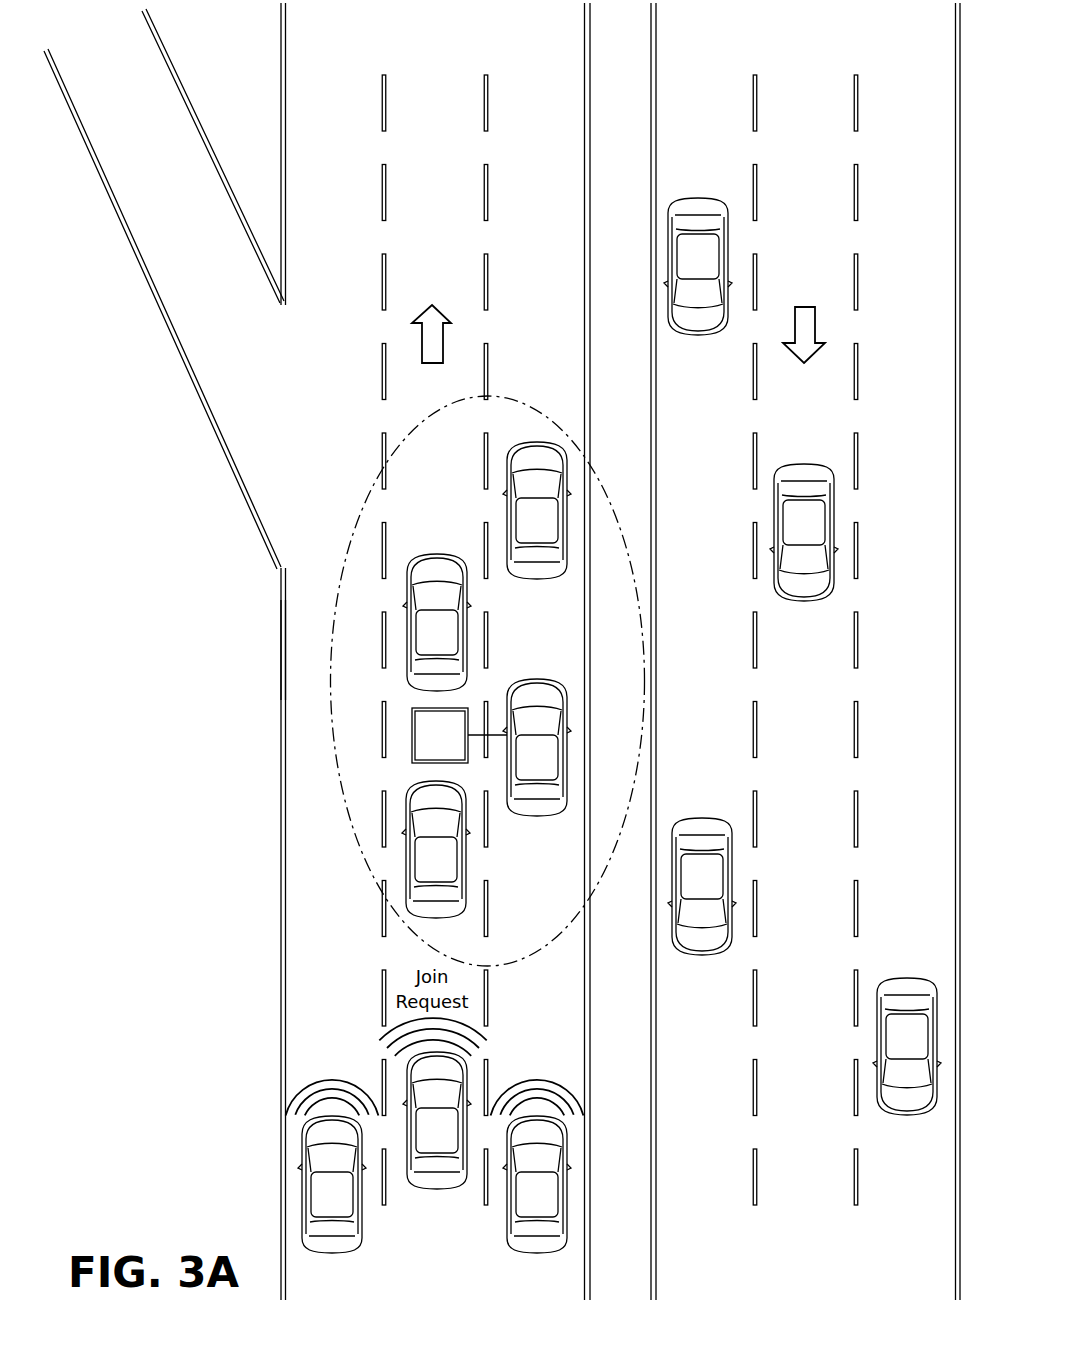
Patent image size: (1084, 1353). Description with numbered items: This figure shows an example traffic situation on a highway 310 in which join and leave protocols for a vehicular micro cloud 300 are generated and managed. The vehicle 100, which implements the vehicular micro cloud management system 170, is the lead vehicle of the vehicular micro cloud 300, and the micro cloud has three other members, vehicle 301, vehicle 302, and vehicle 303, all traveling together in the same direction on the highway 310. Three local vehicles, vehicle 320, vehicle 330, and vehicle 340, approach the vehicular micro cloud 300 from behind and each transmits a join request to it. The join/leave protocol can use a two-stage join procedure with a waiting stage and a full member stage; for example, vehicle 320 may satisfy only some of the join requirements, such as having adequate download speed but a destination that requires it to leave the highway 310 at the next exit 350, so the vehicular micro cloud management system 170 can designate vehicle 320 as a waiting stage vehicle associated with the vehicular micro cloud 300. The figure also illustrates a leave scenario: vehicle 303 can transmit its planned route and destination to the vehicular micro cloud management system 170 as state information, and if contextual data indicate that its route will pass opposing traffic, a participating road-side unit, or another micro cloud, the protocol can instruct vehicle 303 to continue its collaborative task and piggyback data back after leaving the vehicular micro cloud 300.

The vehicle 100 is at (562, 760).
The vehicular micro cloud management system 170 is at (427, 747).
The vehicular micro cloud 300 is at (627, 552).
The member vehicle 301 is at (465, 853).
The member vehicle 302 is at (465, 645).
The vehicle 303 is at (507, 522).
The highway 310 is at (303, 627).
The vehicle 320 is at (308, 1200).
The local vehicle 330 is at (430, 1188).
The local vehicle 340 is at (565, 1215).
The exit 350 is at (228, 380).